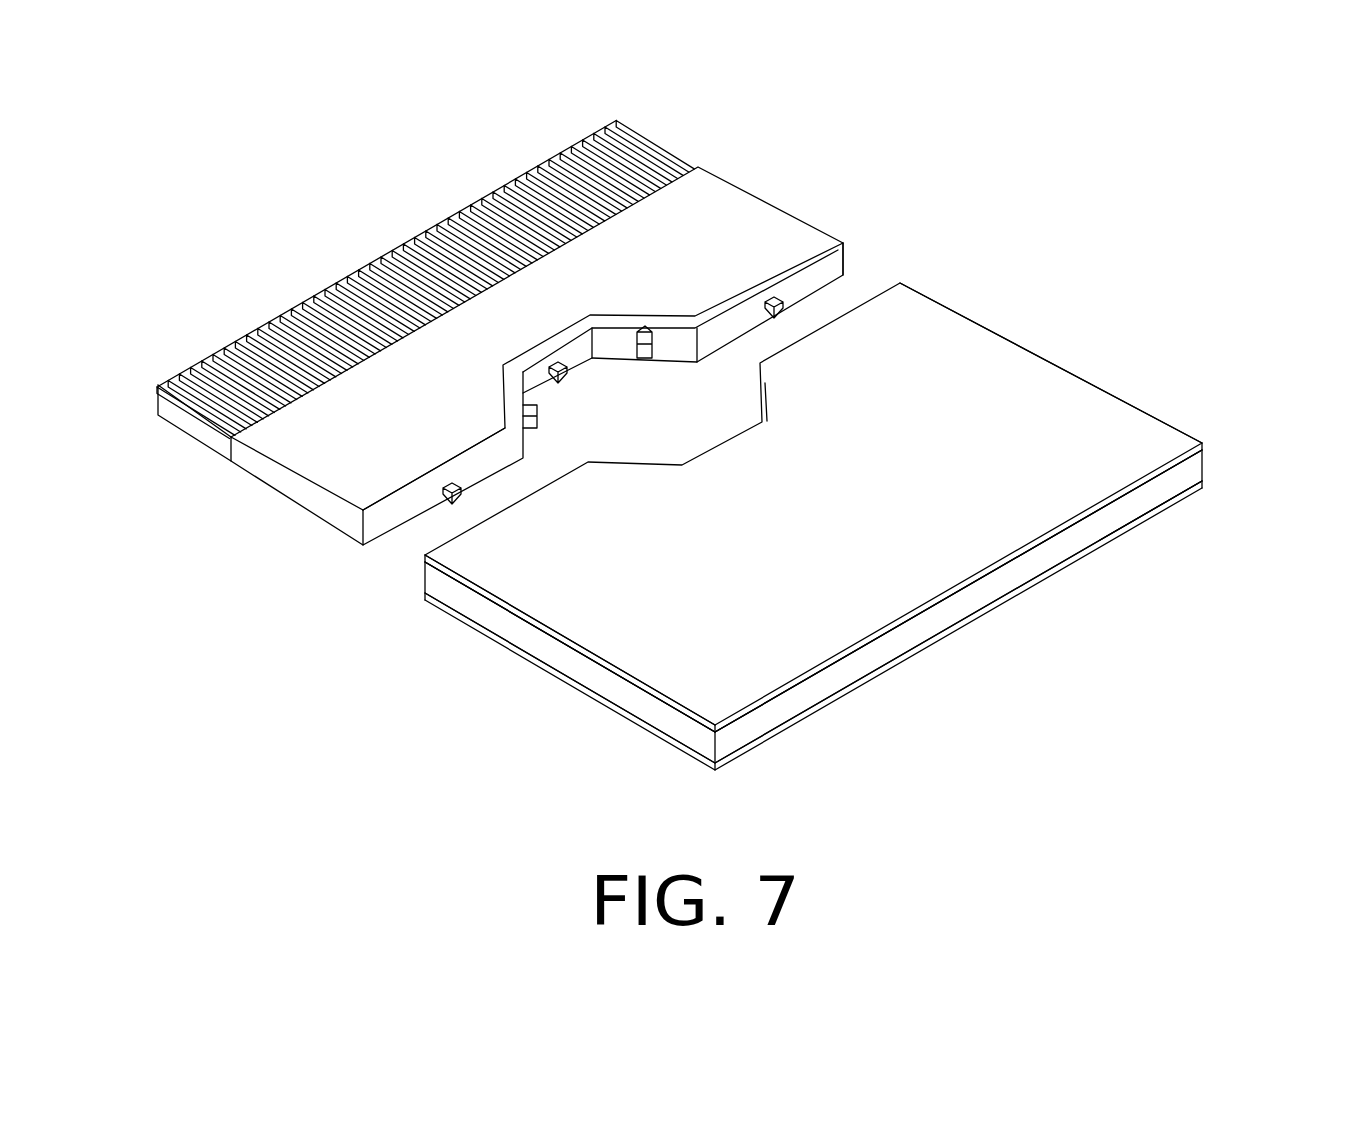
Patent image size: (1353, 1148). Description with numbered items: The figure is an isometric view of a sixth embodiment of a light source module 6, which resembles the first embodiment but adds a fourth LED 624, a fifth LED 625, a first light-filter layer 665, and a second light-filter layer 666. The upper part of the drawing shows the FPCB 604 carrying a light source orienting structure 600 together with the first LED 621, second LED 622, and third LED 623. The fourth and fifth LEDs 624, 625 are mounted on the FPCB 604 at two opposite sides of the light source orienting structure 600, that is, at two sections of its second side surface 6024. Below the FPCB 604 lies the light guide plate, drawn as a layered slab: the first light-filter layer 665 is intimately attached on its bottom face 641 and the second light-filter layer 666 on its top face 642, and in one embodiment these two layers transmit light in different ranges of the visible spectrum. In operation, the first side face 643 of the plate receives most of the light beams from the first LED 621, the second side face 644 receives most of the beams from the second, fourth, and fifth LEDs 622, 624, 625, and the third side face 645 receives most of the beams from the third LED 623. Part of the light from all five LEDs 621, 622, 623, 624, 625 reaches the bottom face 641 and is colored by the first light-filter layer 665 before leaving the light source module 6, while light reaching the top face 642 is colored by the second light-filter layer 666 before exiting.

The light source module 6 is at (180, 165).
The light source orienting structure 600 is at (668, 307).
The FPCB 604 is at (830, 265).
The second side surface 6024 is at (374, 489).
The first LED 621 is at (407, 257).
The second LED 622 is at (558, 362).
The third LED 623 is at (644, 334).
The fourth LED 624 is at (774, 297).
The fifth LED 625 is at (440, 500).
The bottom face 641 is at (828, 723).
The top face 642 is at (1032, 571).
The first side face 643 is at (1218, 468).
The second side face 644 is at (950, 607).
The third side face 645 is at (612, 690).
The first light-filter layer 665 is at (1172, 505).
The second light-filter layer 666 is at (1202, 443).